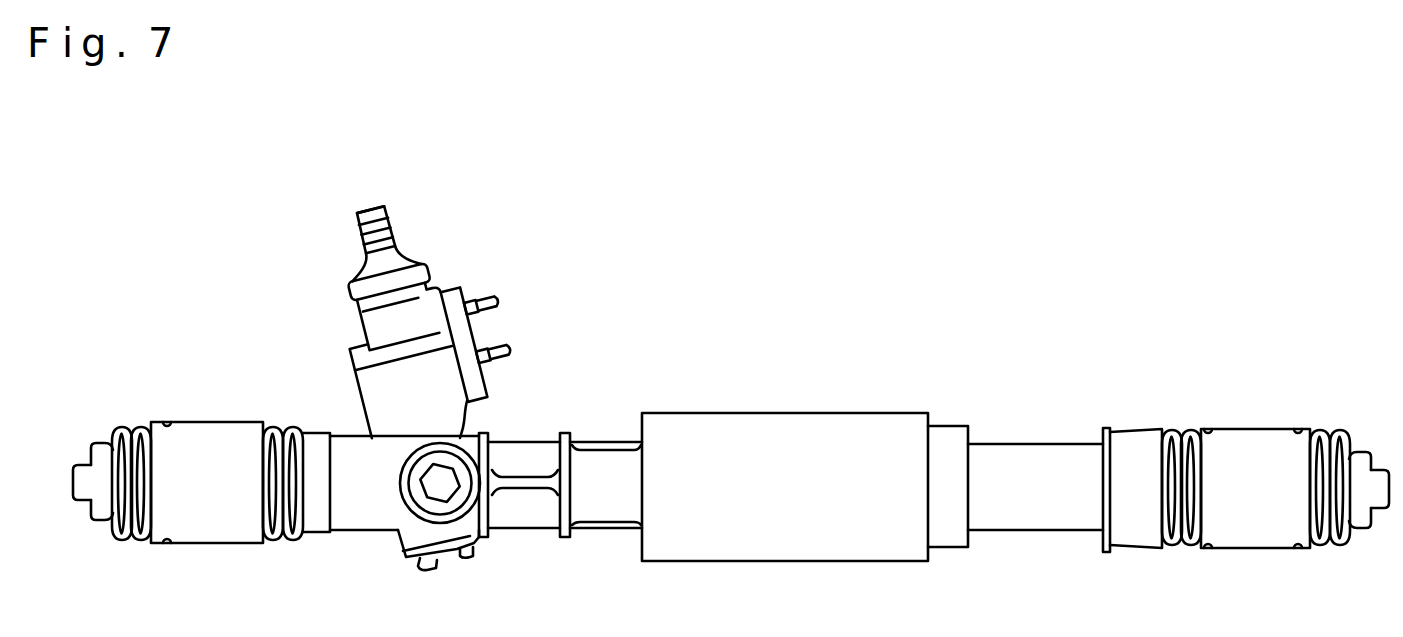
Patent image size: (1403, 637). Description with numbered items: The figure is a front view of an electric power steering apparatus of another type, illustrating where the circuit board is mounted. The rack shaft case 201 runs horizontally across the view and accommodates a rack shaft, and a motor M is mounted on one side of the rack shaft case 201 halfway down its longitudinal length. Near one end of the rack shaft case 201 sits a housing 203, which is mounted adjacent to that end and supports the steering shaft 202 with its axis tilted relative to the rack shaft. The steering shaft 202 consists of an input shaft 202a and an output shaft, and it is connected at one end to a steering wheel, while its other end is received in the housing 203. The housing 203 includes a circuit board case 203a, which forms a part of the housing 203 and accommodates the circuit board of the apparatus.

The rack shaft case 201 is at (597, 440).
The steering shaft 202 is at (350, 201).
The input shaft 202a is at (388, 208).
The housing 203 is at (347, 326).
The circuit board case 203a is at (460, 290).
The motor M is at (790, 412).